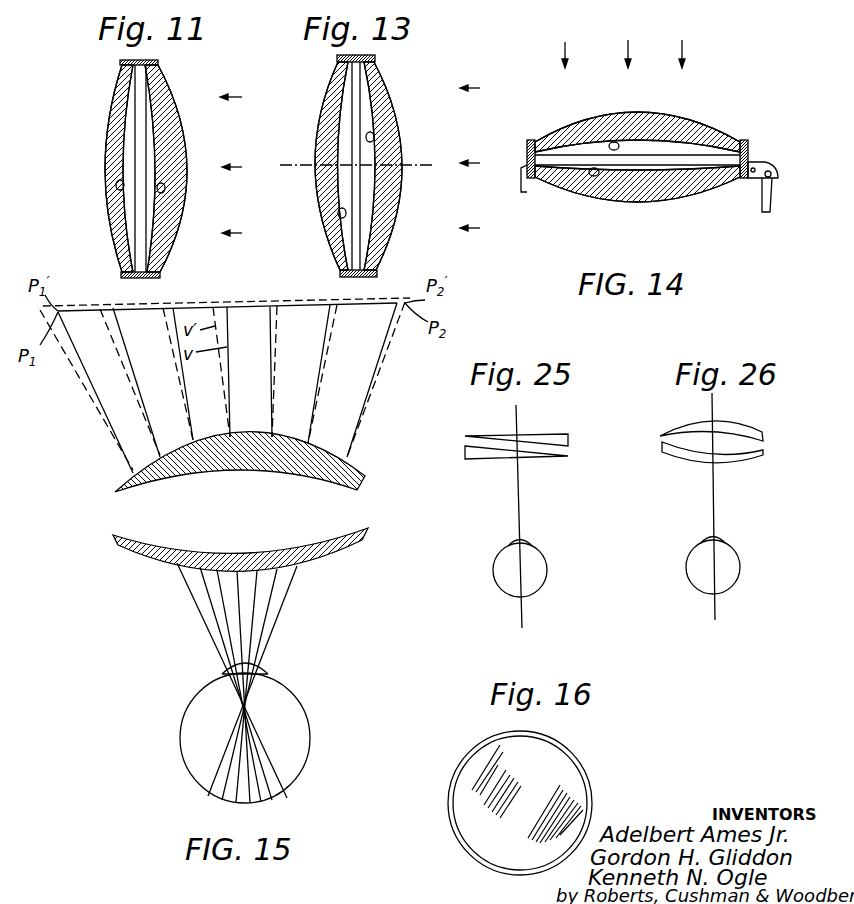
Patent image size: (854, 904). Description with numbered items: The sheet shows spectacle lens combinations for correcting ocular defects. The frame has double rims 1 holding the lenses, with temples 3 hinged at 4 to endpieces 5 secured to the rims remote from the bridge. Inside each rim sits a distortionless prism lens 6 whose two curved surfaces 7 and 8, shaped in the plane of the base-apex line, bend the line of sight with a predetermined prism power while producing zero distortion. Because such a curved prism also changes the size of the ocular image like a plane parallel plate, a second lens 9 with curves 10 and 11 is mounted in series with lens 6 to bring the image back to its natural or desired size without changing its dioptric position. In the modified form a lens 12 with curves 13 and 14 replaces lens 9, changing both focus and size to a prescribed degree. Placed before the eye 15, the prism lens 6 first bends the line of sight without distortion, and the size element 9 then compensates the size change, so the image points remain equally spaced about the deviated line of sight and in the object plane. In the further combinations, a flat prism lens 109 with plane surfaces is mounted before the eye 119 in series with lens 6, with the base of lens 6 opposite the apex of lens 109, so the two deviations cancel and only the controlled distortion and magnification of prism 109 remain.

In FIG. 11, the double rims 1 is at (158, 276).
In FIG. 13, the double rims 1 is at (376, 274).
In FIG. 14, the double rims 1 is at (533, 142).
In FIG. 14, the temples 3 is at (770, 205).
In FIG. 14, the hinge 4 is at (778, 186).
In FIG. 14, the endpieces 5 is at (768, 166).
In FIG. 11, the distortionless prism lens 6 is at (178, 162).
In FIG. 13, the distortionless prism lens 6 is at (390, 112).
In FIG. 14, the distortionless prism lens 6 is at (660, 118).
In FIG. 15, the distortionless prism lens 6 is at (302, 445).
In FIG. 25, the distortionless prism lens 6 is at (540, 437).
In FIG. 26, the distortionless prism lens 6 is at (743, 428).
In FIG. 11, the curved surface of prism lens 7 is at (176, 133).
In FIG. 13, the curved surface of prism lens 7 is at (387, 90).
In FIG. 14, the curved surface of prism lens 7 is at (697, 122).
In FIG. 11, the curved surface of prism lens 8 is at (163, 193).
In FIG. 13, the curved surface of prism lens 8 is at (374, 137).
In FIG. 14, the curved surface of prism lens 8 is at (617, 143).
In FIG. 11, the size lens 9 is at (110, 128).
In FIG. 15, the size lens 9 is at (288, 568).
In FIG. 11, the curve of size lens 10 is at (120, 190).
In FIG. 11, the curve of size lens 11 is at (105, 170).
In FIG. 13, the focus and size correcting lens 12 is at (327, 198).
In FIG. 14, the focus and size correcting lens 12 is at (655, 186).
In FIG. 13, the curve of lens 12 13 is at (340, 216).
In FIG. 14, the curve of lens 12 13 is at (593, 176).
In FIG. 13, the curve of lens 12 14 is at (318, 120).
In FIG. 14, the curve of lens 12 14 is at (612, 205).
In FIG. 15, the eye 15 is at (275, 733).
In FIG. 25, the flat prism lens 109 is at (492, 462).
In FIG. 26, the flat prism lens 109 is at (742, 458).
In FIG. 25, the eye 119 is at (540, 565).
In FIG. 26, the eye 119 is at (732, 557).